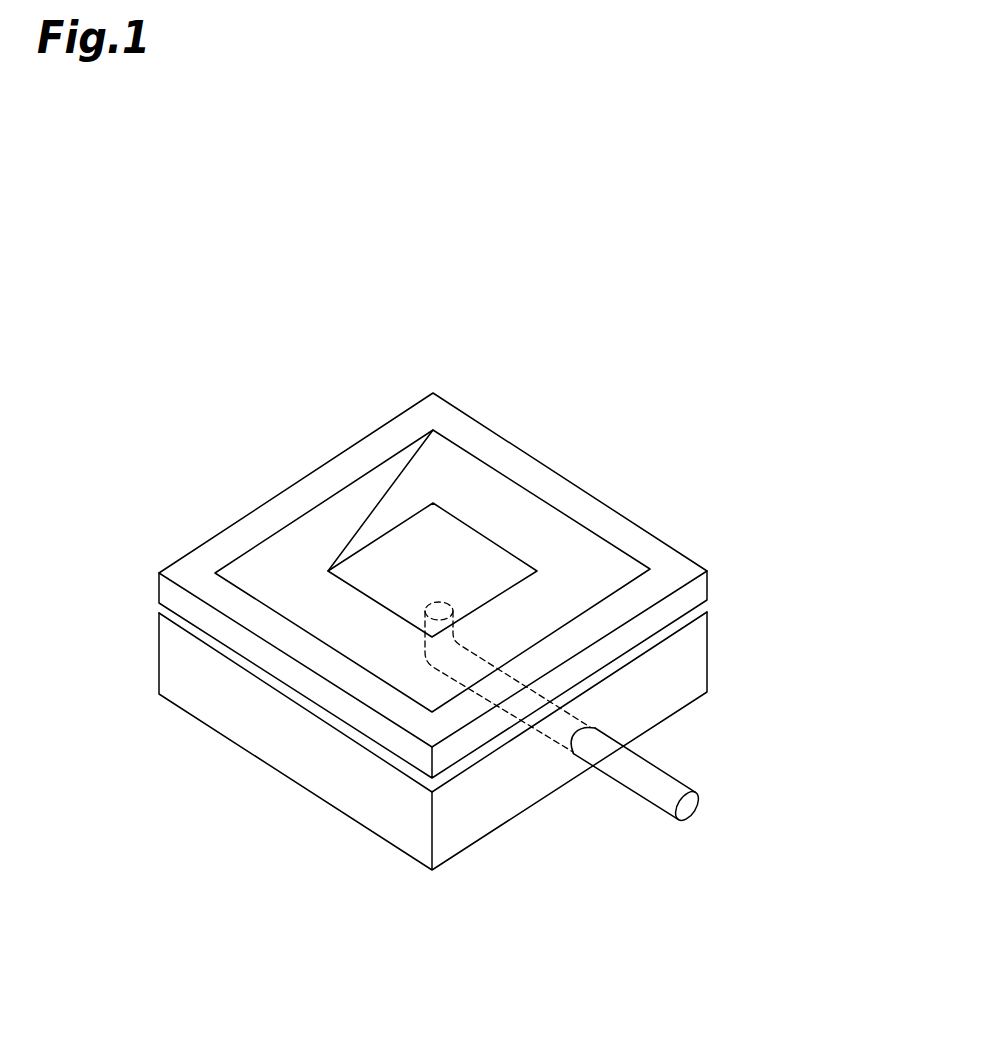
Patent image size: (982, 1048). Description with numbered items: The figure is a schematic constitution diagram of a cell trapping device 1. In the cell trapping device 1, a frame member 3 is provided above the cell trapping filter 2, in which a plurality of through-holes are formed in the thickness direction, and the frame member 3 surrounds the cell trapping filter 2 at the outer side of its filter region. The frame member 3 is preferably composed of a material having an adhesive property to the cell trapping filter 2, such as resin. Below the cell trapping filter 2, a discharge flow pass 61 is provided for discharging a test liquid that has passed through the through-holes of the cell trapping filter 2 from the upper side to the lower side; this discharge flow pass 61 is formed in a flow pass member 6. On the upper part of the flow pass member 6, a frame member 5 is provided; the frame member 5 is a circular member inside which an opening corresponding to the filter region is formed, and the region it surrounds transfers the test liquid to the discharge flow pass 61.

The cell trapping device 1 is at (677, 386).
The cell trapping filter 2 is at (483, 565).
The frame member 3 is at (478, 452).
The frame member 5 is at (663, 558).
The flow pass member 6 is at (708, 650).
The discharge flow pass 61 is at (673, 777).